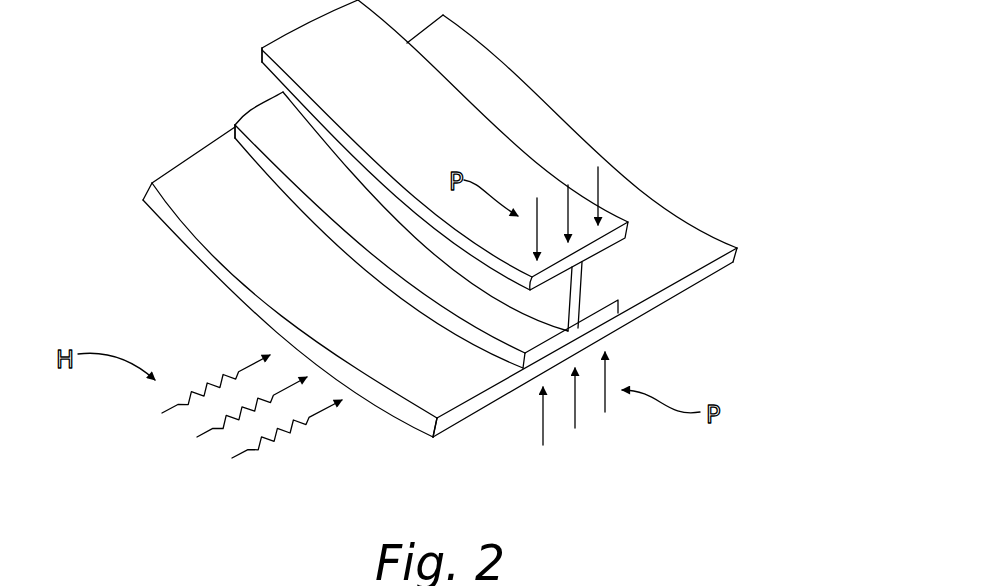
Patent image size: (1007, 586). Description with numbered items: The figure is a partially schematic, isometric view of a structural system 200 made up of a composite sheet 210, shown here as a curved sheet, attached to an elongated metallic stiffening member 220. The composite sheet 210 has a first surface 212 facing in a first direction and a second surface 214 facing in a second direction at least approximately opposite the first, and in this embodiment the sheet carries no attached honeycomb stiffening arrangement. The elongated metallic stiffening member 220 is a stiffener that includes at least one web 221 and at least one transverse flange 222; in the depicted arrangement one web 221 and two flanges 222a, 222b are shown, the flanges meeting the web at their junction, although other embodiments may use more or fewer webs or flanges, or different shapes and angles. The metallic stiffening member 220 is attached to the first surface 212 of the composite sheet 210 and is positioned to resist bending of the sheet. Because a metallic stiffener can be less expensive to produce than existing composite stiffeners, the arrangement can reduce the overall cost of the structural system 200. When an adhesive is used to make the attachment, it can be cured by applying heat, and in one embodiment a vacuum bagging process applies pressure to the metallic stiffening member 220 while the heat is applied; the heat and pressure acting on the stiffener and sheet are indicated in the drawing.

The structural system 200 is at (472, 432).
The composite sheet 210 is at (470, 226).
The first surface 212 is at (703, 243).
The second surface 214 is at (700, 288).
The elongated metallic stiffening member 220 is at (468, 145).
The web 221 is at (572, 299).
The transverse flange 222 is at (250, 58).
The first flange 222a is at (543, 163).
The second flange 222b is at (468, 298).